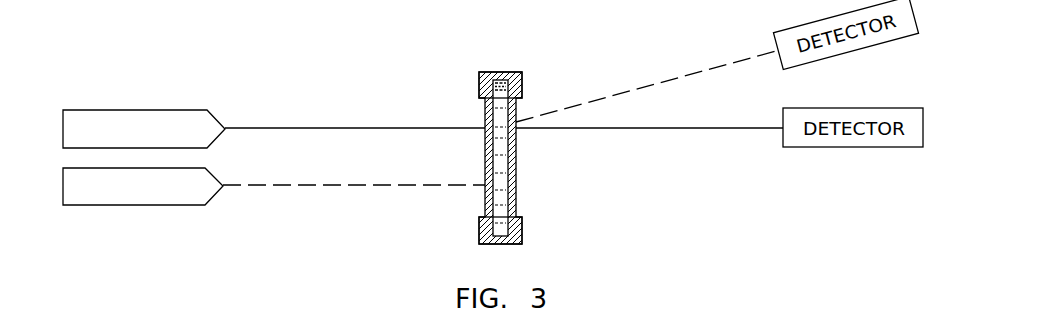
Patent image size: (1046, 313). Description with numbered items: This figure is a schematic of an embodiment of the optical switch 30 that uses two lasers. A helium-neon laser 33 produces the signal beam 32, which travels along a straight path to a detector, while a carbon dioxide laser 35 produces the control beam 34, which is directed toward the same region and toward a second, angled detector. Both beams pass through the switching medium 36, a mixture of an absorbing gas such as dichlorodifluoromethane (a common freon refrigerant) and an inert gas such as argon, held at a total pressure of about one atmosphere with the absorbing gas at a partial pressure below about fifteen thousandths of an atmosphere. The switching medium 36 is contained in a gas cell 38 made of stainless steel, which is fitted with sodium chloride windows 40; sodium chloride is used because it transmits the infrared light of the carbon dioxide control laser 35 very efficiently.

The switch 30 is at (396, 82).
The signal beam 32 is at (504, 107).
The helium-neon laser 33 is at (127, 110).
The control beam 34 is at (320, 187).
The carbon dioxide laser 35 is at (138, 205).
The switching medium 36 is at (500, 73).
The gas cell 38 is at (508, 245).
The sodium chloride windows 40 is at (485, 188).